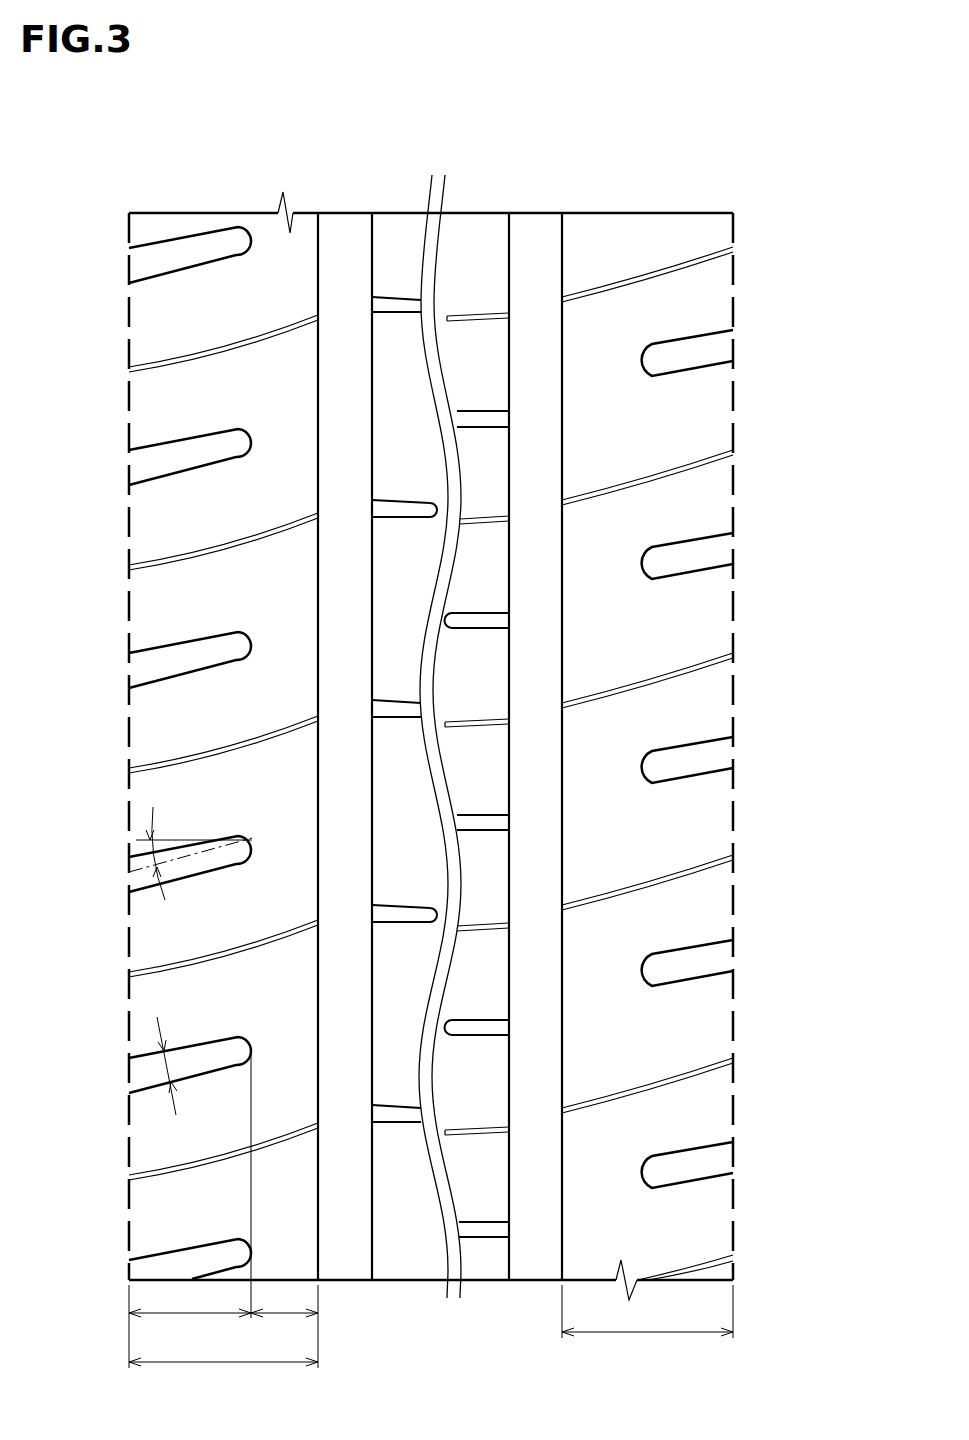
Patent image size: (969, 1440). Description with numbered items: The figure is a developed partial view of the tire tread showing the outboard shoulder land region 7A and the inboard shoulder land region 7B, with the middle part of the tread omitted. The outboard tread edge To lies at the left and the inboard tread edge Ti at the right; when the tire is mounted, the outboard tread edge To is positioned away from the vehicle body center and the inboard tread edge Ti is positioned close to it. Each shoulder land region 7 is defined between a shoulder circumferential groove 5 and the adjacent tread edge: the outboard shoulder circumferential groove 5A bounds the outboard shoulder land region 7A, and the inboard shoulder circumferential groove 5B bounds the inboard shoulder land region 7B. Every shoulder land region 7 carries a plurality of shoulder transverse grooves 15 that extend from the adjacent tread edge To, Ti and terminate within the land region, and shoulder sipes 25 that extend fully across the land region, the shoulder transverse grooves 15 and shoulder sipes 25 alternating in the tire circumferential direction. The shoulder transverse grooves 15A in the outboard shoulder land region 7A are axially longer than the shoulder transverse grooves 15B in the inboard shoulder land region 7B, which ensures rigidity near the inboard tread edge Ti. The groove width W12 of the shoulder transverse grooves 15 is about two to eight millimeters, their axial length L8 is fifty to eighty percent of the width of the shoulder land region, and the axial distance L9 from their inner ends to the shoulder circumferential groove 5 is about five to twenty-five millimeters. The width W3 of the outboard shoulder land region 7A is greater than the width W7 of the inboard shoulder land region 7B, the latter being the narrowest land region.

The shoulder circumferential groove 5 is at (538, 147).
The outboard shoulder circumferential groove 5A is at (345, 255).
The inboard shoulder circumferential groove 5B is at (535, 255).
The shoulder land region 7 is at (172, 298).
The outboard shoulder land region 7A is at (220, 290).
The inboard shoulder land region 7B is at (612, 250).
The shoulder transverse groove 15 is at (190, 452).
The shoulder transverse groove in the outboard shoulder land region 15A is at (190, 658).
The shoulder transverse groove in the inboard shoulder land region 15B is at (685, 762).
The shoulder sipe 25 is at (207, 348).
The outboard tread edge To is at (129, 237).
The inboard tread edge Ti is at (733, 237).
The groove width of the shoulder transverse grooves W12 is at (172, 1079).
The length in the tire axial direction of the shoulder transverse grooves L8 is at (190, 1209).
The distance from the axially inner ends of the shoulder transverse grooves to the s L9 is at (284, 1326).
The width in the tire axial direction of the outboard shoulder land region W3 is at (223, 1377).
The width in the tire axial direction of the inboard shoulder land region W7 is at (647, 1326).